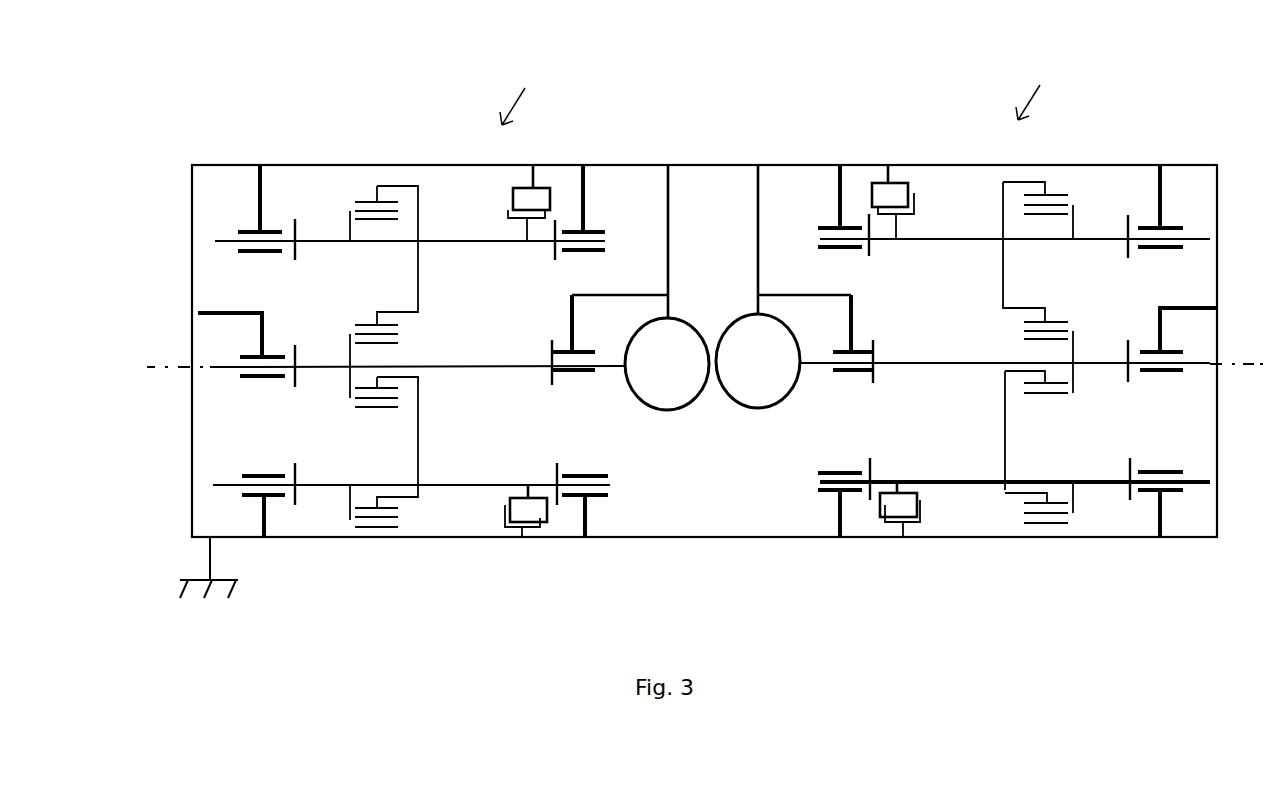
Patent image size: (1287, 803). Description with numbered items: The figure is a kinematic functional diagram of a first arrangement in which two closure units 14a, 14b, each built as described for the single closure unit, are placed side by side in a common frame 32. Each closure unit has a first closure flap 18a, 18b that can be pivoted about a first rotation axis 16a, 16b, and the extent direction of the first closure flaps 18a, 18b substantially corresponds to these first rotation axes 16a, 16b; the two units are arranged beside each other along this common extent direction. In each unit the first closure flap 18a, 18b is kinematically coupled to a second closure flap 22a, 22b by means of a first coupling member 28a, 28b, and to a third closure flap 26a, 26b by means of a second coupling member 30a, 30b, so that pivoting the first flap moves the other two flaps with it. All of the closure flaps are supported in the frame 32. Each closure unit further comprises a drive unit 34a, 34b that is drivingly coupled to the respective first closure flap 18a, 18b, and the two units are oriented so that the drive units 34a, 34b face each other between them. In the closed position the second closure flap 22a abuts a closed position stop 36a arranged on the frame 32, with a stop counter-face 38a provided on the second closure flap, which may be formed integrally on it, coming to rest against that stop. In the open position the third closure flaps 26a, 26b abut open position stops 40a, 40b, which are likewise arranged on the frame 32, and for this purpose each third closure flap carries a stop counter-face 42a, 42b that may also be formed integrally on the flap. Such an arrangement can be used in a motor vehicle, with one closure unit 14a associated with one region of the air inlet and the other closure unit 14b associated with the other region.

The closure unit 14a is at (523, 92).
The closure unit 14b is at (1044, 90).
The first rotation axis 16a is at (148, 365).
The first rotation axis 16b is at (1243, 365).
The first closure flap 18a is at (320, 368).
The first closure flap 18b is at (1100, 363).
The second closure flap 22a is at (318, 241).
The second closure flap 22b is at (945, 239).
The third closure flap 26a is at (478, 485).
The third closure flap 26b is at (962, 482).
The first coupling member 28a is at (405, 187).
The first coupling member 28b is at (1015, 182).
The second coupling member 30a is at (415, 505).
The second coupling member 30b is at (1005, 537).
The frame 32 is at (650, 537).
The drive unit 34a is at (640, 287).
The drive unit 34b is at (783, 286).
The closed position stop 36a is at (556, 190).
The stop counter-face 38a is at (513, 200).
The open position stop 40a is at (510, 537).
The open position stop 40b is at (920, 524).
The stop counter-face 42a is at (545, 518).
The stop counter-face 42b is at (882, 507).